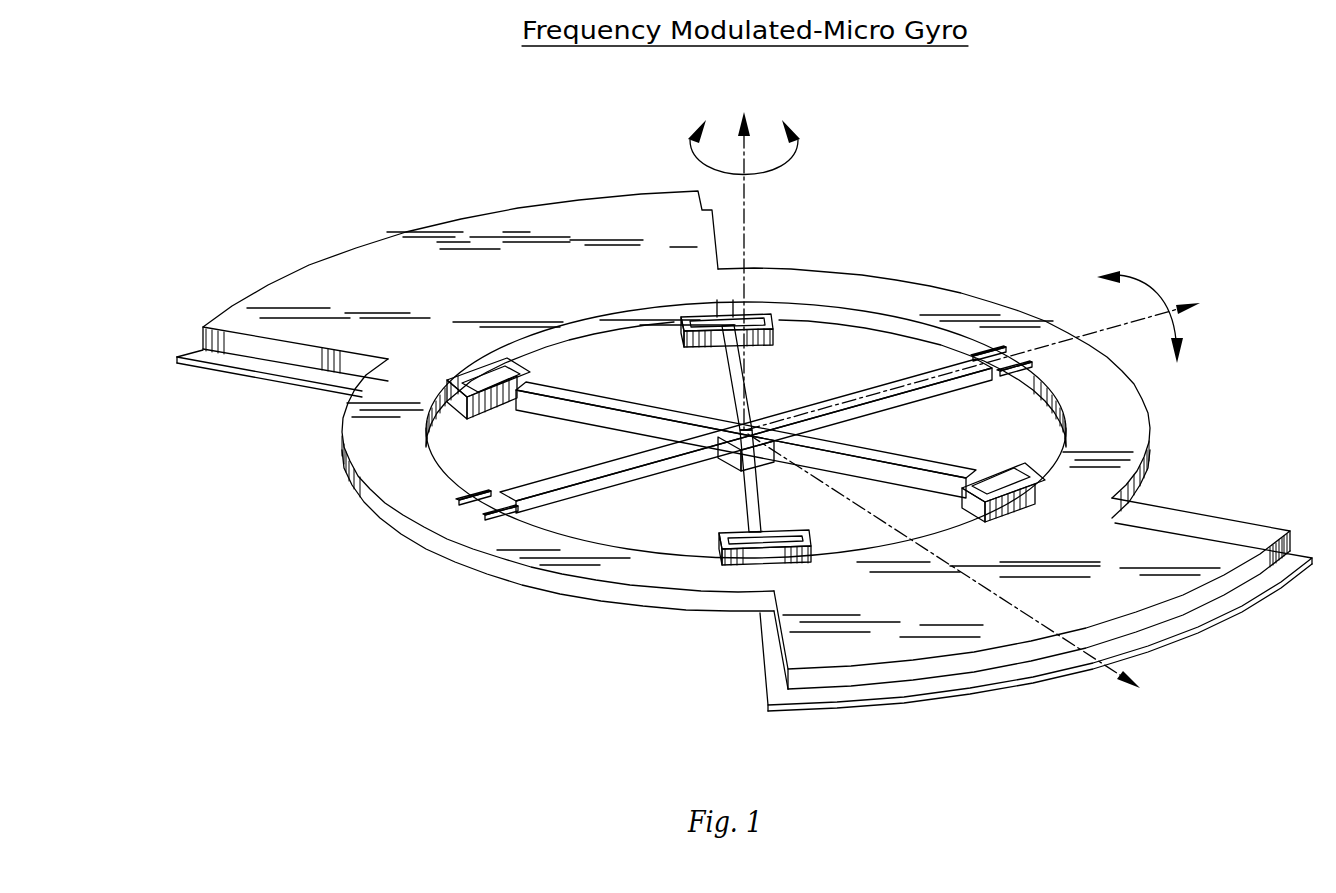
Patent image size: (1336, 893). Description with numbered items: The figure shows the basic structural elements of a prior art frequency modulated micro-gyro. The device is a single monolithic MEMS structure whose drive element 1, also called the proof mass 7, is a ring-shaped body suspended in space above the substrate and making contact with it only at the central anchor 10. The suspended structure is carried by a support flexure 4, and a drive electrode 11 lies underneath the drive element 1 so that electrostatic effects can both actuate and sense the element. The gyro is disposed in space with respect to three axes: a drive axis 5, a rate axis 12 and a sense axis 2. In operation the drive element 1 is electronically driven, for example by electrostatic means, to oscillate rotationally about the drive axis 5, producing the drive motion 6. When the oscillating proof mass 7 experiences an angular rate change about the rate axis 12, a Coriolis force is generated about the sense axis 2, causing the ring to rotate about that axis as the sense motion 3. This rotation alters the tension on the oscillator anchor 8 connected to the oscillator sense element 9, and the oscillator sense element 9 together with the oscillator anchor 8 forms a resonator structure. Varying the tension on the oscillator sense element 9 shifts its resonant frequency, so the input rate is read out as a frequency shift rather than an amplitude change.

The drive element 1 is at (556, 238).
The sense axis 2 is at (746, 249).
The sense motion 3 is at (775, 167).
The support flexure 4 is at (773, 337).
The drive axis 5 is at (1005, 345).
The drive motion 6 is at (1176, 330).
The proof mass 7 is at (1117, 417).
The oscillator anchor 8 is at (557, 480).
The oscillator sense element 9 is at (470, 476).
The central anchor 10 is at (733, 460).
The drive electrode 11 is at (782, 698).
The rate axis 12 is at (972, 578).